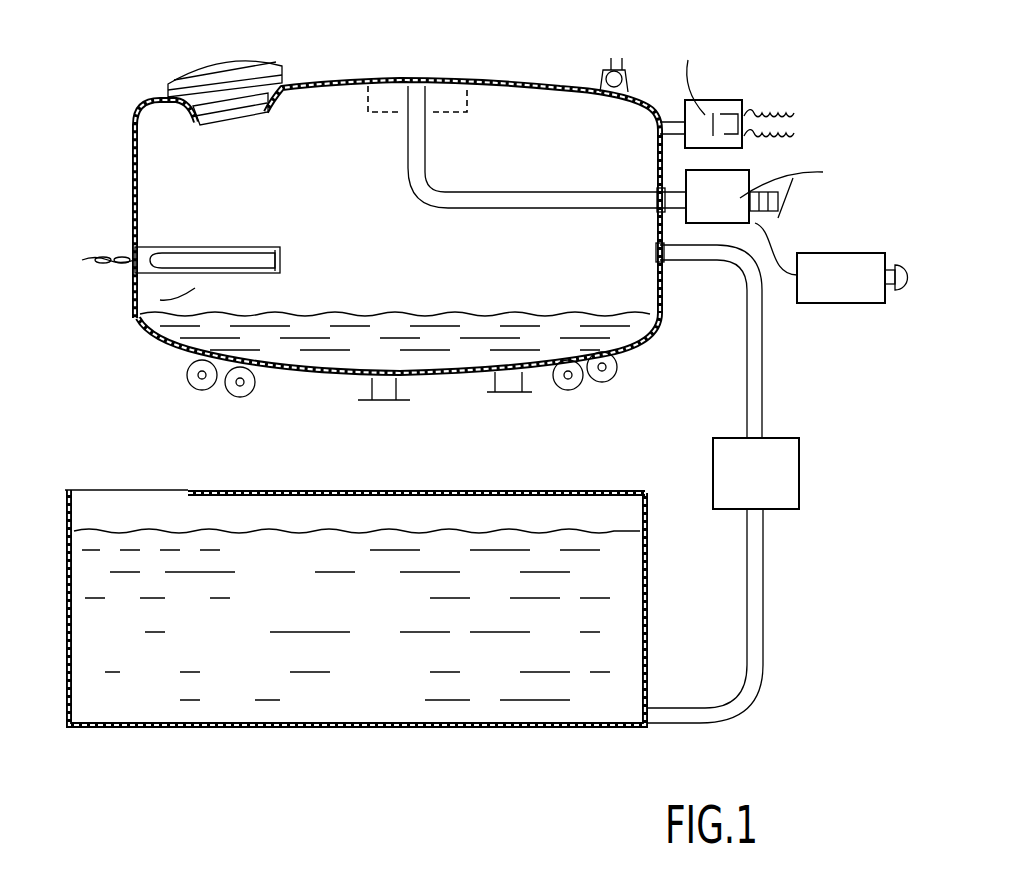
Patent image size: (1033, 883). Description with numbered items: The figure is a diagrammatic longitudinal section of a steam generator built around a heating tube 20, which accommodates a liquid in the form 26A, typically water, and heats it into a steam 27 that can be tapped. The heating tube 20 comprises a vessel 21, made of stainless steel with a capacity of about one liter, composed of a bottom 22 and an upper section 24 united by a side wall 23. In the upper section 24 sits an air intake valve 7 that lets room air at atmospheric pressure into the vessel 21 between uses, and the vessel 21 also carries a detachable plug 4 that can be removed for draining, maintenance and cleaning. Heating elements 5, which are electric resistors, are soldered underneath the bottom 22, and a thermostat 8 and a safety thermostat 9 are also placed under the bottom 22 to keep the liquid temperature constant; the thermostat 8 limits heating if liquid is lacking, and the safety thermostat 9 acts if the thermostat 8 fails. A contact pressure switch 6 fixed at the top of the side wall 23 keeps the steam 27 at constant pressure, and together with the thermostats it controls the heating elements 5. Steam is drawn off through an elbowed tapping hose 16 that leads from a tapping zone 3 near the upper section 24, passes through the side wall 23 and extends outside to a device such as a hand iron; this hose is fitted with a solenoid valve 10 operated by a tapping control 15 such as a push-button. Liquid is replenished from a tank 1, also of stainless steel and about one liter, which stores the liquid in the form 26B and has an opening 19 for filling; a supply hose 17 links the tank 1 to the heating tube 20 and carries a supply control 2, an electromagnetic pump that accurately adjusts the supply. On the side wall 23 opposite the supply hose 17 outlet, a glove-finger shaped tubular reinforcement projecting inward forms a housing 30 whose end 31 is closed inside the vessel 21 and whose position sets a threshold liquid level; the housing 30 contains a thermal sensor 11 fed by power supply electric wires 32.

The tank 1 is at (391, 607).
The supply control 2 is at (800, 475).
The tapping zone 3 is at (443, 95).
The detachable plug 4 is at (168, 93).
The heating elements 5 is at (238, 398).
The contact pressure switch 6 is at (715, 100).
The air intake valve 7 is at (600, 75).
The thermostat 8 is at (497, 392).
The safety thermostat 9 is at (370, 400).
The solenoid valve 10 is at (748, 182).
The thermal sensor 11 is at (193, 258).
The tapping control 15 is at (910, 272).
The tapping hose 16 is at (545, 192).
The supply hose 17 is at (764, 388).
The opening 19 is at (123, 490).
The heating tube 20 is at (366, 66).
The vessel 21 is at (126, 190).
The bottom 22 is at (440, 378).
The side wall 23 is at (140, 165).
The upper section 24 is at (322, 90).
The liquid in the heating tube 26A is at (543, 328).
The liquid in the tank 26B is at (620, 630).
The steam 27 is at (160, 300).
The housing 30 is at (228, 247).
The end 31 is at (280, 260).
The power supply electric wires 32 is at (110, 248).